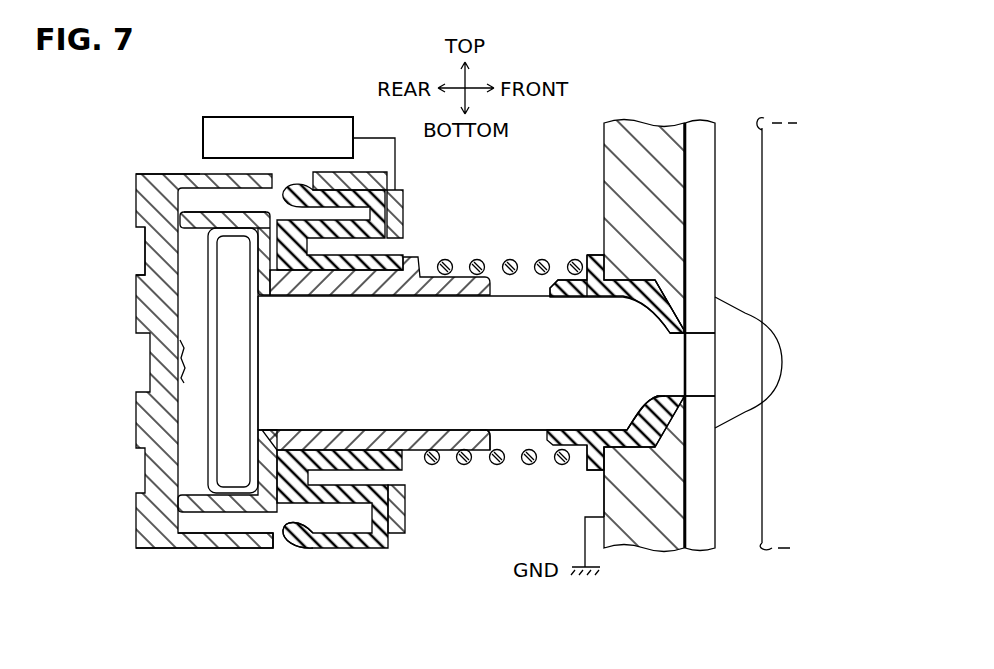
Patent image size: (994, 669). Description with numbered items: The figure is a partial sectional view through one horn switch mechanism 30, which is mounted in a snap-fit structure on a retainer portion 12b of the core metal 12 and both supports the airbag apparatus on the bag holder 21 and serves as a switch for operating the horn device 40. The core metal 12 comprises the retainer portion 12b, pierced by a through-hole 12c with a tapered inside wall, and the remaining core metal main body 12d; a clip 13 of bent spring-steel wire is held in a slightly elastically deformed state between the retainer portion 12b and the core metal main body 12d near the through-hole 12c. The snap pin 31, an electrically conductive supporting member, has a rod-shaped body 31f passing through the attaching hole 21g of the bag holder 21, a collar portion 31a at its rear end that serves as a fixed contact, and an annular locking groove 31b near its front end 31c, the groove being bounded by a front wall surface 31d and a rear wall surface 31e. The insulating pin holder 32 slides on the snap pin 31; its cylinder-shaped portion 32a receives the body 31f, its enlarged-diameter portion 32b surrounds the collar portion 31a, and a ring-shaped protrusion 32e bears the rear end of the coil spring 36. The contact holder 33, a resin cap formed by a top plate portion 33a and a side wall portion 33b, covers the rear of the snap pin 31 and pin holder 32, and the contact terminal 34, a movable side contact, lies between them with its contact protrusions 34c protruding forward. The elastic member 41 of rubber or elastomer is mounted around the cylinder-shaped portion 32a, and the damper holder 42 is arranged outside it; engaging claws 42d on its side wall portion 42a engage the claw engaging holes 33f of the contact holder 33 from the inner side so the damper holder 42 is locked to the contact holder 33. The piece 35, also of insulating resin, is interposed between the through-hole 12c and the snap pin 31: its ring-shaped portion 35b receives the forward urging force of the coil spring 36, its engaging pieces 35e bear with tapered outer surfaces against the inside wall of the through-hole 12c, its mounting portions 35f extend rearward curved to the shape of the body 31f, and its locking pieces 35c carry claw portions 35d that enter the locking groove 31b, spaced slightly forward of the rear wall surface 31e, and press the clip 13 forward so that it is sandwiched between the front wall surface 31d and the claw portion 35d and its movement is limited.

The horn switch mechanism 30 is at (171, 166).
The horn device 40 is at (287, 116).
The damper holder 42 is at (335, 181).
The side wall portion 42a is at (355, 533).
The engaging claw 42d is at (303, 545).
The bag holder 21 is at (405, 200).
The attaching hole 21g is at (405, 488).
The pin holder 32 is at (284, 346).
The enlarged-diameter portion 32b is at (196, 210).
The cylinder-shaped portion 32a is at (347, 437).
The ring-shaped protrusion 32e is at (410, 470).
The contact holder 33 is at (178, 363).
The top plate portion 33a is at (141, 313).
The side wall portion 33b is at (218, 545).
The claw engaging hole 33f is at (282, 545).
The contact terminal 34 is at (272, 360).
The contact protrusion 34c is at (184, 365).
The snap pin 31 is at (544, 413).
The collar portion 31a is at (250, 397).
The locking groove 31b is at (660, 399).
The front end 31c is at (782, 364).
The front wall surface 31d is at (720, 360).
The rear wall surface 31e is at (649, 412).
The body 31f is at (516, 431).
The elastic member 41 is at (342, 275).
The piece 35 is at (624, 277).
The ring-shaped portion 35b is at (592, 257).
The locking piece 35c is at (647, 302).
The claw portion 35d is at (684, 336).
The engaging piece 35e is at (686, 512).
The mounting portion 35f is at (563, 298).
The coil spring 36 is at (545, 259).
The core metal 12 is at (695, 316).
The retainer portion 12b is at (630, 137).
The through-hole 12c is at (605, 477).
The core metal main body 12d is at (757, 127).
The clip 13 is at (710, 142).